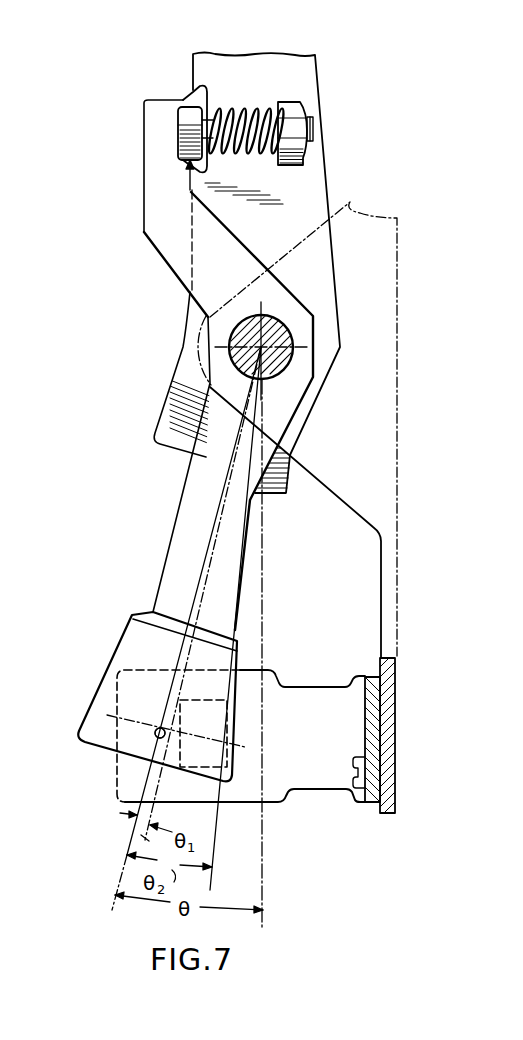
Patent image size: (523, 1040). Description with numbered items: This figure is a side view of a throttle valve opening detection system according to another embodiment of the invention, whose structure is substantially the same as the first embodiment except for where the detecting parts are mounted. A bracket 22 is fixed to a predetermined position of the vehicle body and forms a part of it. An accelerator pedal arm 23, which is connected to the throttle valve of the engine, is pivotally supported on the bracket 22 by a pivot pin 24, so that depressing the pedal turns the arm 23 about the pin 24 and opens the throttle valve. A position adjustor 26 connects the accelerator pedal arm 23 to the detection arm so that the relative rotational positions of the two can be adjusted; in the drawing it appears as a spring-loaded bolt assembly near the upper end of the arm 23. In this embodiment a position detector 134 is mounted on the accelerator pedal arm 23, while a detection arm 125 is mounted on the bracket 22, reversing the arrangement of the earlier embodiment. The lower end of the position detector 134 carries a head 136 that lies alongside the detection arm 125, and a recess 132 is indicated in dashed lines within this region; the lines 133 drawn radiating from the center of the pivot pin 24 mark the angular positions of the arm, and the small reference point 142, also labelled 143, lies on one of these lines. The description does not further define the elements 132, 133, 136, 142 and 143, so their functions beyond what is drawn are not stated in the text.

The bracket 22 is at (392, 697).
The accelerator pedal arm 23 is at (302, 83).
The pivot pin 24 is at (270, 331).
The position adjustor 26 is at (246, 106).
The detection arm 125 is at (328, 688).
The recess 132 is at (213, 700).
The alternate position of lever 133 is at (123, 812).
The position detector 134 is at (112, 632).
The head of lever 136 is at (99, 683).
The contact surface center 142 is at (128, 748).
The contact surface 143 is at (102, 764).